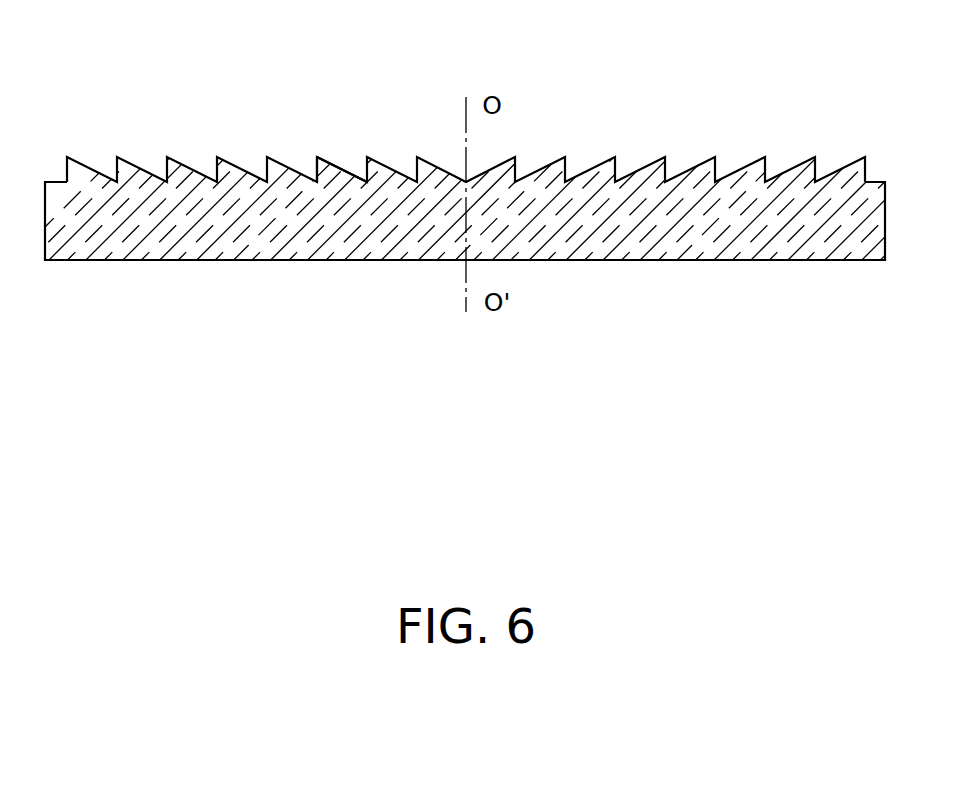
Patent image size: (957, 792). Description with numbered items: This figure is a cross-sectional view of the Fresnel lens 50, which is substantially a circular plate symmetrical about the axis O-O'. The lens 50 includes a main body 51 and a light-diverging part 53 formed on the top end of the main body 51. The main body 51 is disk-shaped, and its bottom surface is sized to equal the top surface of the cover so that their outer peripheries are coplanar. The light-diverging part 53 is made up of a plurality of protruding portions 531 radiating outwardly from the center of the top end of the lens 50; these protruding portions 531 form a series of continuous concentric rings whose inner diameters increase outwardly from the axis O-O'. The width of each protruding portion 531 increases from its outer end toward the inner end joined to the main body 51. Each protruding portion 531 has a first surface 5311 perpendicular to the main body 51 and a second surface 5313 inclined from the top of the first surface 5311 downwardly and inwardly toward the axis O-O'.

The lens 50 is at (483, 201).
The main body 51 is at (757, 227).
The light-diverging part 53 is at (473, 184).
The protruding portion 531 is at (339, 100).
The first surface 5311 is at (315, 168).
The second surface 5313 is at (365, 121).